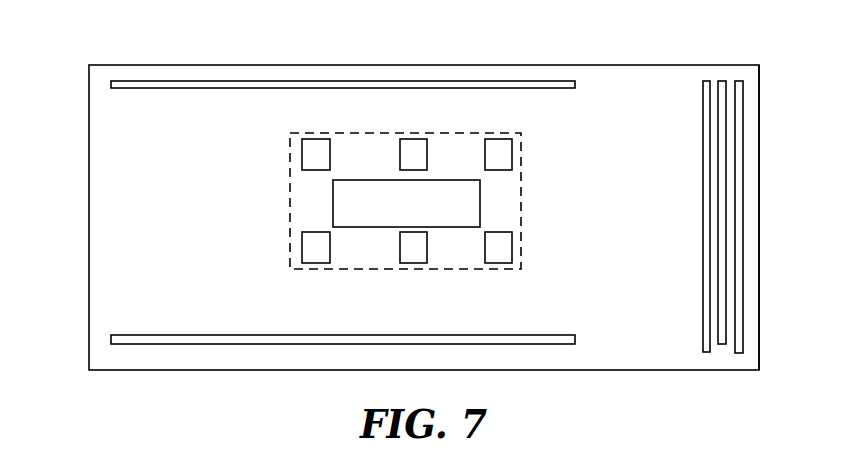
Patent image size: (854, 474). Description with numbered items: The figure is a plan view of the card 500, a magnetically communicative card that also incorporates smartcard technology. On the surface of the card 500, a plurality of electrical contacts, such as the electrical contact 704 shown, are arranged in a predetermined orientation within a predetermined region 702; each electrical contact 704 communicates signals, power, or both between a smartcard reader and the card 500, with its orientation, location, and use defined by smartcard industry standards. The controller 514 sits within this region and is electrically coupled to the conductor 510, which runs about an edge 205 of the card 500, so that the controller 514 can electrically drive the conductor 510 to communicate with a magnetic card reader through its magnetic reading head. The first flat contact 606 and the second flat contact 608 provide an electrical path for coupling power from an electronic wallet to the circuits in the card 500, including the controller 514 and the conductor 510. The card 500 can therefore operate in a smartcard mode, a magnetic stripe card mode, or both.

The card 500 is at (193, 65).
The edge 205 is at (759, 120).
The first flat contact 606 is at (307, 81).
The second flat contact 608 is at (173, 334).
The predetermined region 702 is at (362, 272).
The electrical contact 704 is at (513, 246).
The controller 514 is at (457, 180).
The conductor 510 is at (743, 301).